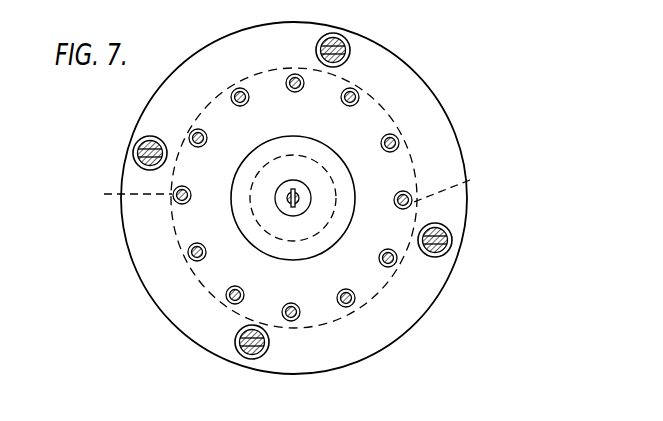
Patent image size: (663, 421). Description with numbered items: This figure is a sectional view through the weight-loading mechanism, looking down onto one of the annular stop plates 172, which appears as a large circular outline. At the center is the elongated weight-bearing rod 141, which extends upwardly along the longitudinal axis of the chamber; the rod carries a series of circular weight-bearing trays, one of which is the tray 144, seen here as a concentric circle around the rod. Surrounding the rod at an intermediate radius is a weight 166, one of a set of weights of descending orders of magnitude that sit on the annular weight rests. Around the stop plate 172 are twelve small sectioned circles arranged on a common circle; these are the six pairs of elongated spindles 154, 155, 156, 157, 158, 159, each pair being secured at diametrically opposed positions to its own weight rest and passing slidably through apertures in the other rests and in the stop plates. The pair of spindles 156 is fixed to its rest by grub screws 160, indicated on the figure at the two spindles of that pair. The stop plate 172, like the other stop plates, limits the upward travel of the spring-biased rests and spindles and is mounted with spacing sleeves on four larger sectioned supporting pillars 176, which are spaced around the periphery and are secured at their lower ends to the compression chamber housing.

The weight-bearing rod 141 is at (295, 193).
The weight-bearing tray 144 is at (338, 198).
The pair of spindles 154 is at (228, 299).
The pair of spindles 155 is at (188, 257).
The pair of spindles 156 is at (175, 203).
The pair of spindles 157 is at (192, 137).
The pair of spindles 158 is at (235, 90).
The pair of spindles 159 is at (292, 78).
The grub screws 160 is at (294, 186).
The weight 166 is at (238, 170).
The stop plate 172 is at (412, 68).
The supporting pillars 176 is at (348, 52).